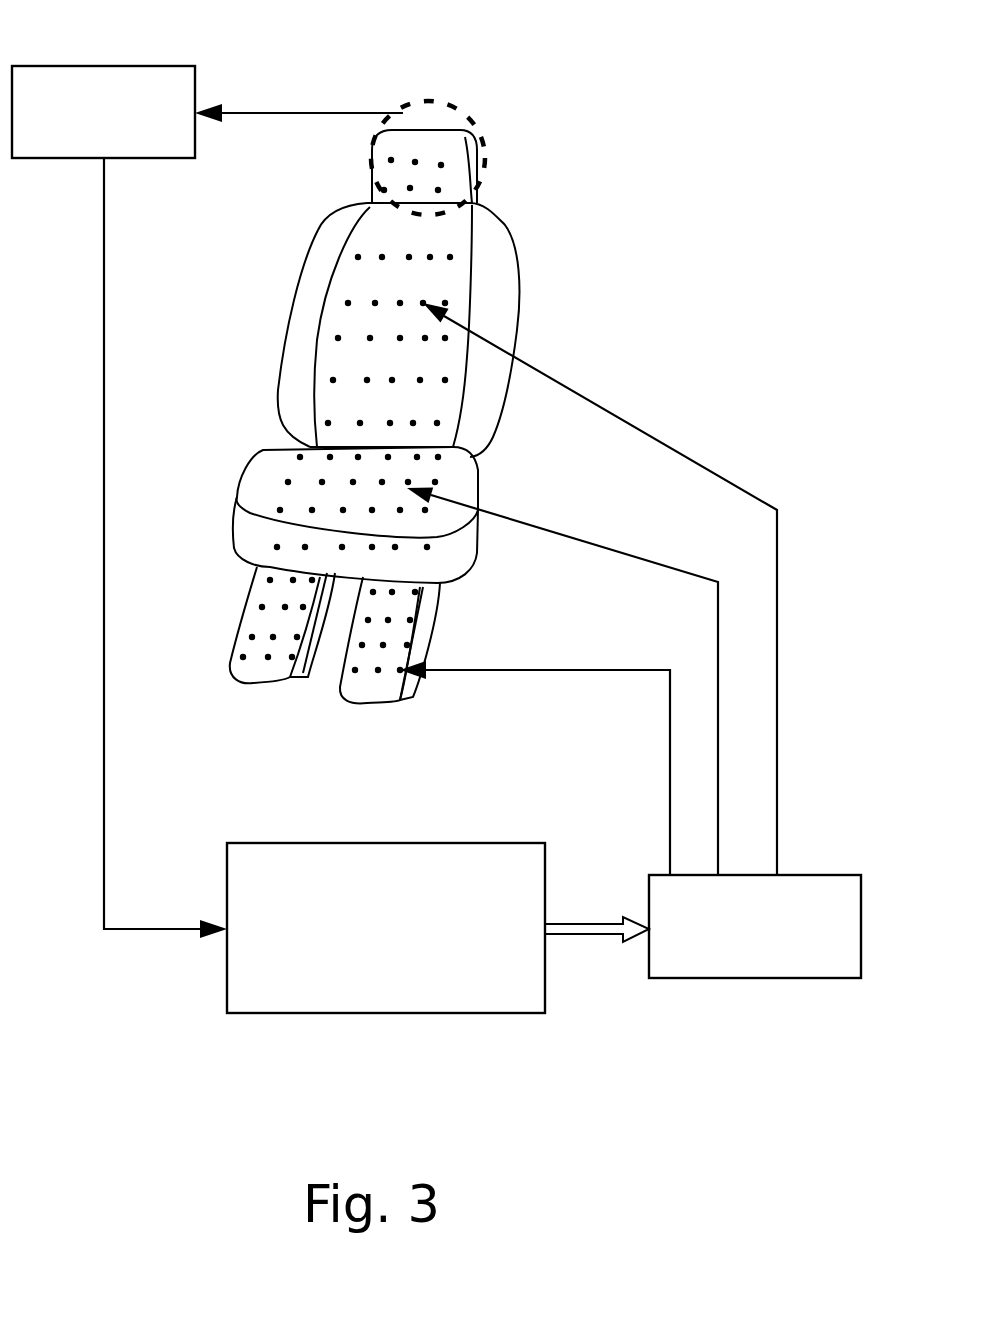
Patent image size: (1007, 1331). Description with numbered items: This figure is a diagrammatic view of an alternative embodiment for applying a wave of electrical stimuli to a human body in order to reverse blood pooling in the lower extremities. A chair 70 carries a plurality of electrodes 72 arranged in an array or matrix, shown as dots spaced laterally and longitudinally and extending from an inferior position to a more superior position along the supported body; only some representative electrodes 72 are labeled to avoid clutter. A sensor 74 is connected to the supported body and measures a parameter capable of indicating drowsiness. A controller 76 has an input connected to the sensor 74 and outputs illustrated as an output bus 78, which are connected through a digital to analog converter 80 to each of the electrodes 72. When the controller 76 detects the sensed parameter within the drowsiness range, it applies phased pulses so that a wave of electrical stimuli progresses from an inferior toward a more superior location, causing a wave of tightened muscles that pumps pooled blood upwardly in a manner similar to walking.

The chair 70 is at (517, 297).
The electrodes 72 is at (430, 257).
The sensor 74 is at (123, 83).
The controller 76 is at (255, 902).
The output bus 78 is at (600, 930).
The digital to analog converter 80 is at (835, 893).